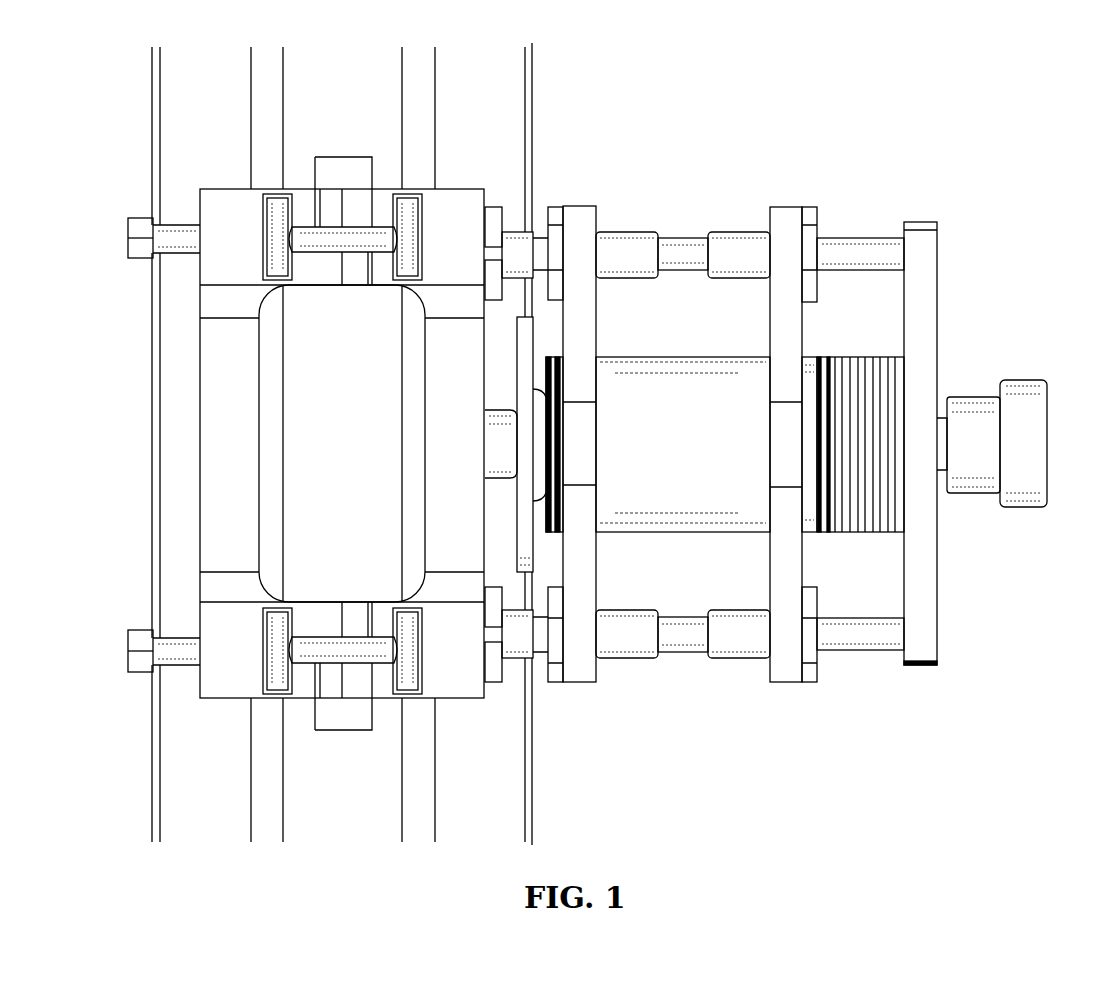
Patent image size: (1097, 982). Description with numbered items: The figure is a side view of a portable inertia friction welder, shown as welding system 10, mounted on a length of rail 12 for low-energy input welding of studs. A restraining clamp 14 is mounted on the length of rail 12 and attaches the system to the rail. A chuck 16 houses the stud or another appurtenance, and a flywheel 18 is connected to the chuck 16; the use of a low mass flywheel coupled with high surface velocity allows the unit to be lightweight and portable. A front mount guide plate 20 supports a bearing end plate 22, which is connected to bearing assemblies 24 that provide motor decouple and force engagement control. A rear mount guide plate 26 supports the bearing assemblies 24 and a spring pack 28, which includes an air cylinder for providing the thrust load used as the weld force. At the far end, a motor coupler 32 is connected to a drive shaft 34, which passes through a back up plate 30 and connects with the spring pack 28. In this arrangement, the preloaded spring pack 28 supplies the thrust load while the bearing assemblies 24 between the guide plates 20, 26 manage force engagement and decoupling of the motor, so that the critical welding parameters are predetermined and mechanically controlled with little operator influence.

The welding system 10 is at (895, 114).
The length of rail 12 is at (361, 794).
The restraining clamp 14 is at (200, 549).
The chuck 16 is at (497, 480).
The flywheel 18 is at (525, 574).
The front mount guide plate 20 is at (580, 206).
The bearing end plate 22 is at (549, 534).
The bearing assemblies 24 is at (654, 465).
The rear mount guide plate 26 is at (785, 683).
The spring pack 28 is at (840, 357).
The back up plate 30 is at (922, 666).
The motor coupler 32 is at (1025, 380).
The drive shaft 34 is at (948, 472).